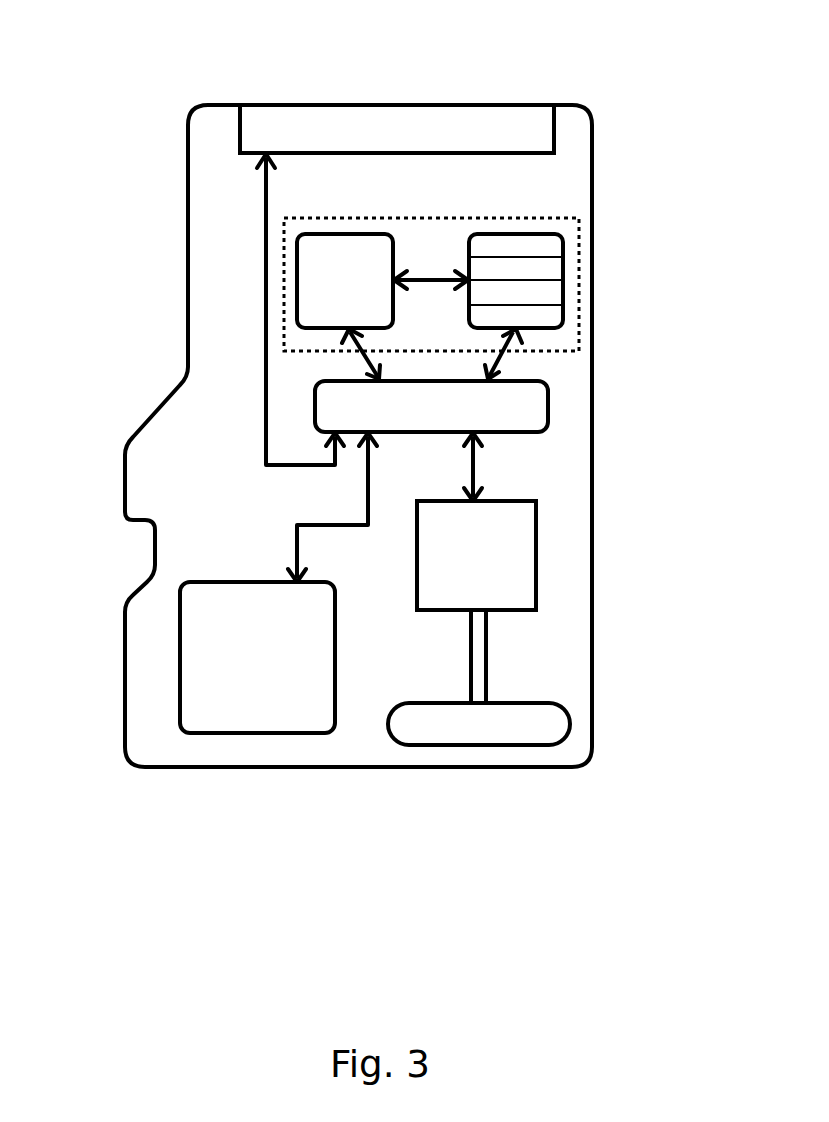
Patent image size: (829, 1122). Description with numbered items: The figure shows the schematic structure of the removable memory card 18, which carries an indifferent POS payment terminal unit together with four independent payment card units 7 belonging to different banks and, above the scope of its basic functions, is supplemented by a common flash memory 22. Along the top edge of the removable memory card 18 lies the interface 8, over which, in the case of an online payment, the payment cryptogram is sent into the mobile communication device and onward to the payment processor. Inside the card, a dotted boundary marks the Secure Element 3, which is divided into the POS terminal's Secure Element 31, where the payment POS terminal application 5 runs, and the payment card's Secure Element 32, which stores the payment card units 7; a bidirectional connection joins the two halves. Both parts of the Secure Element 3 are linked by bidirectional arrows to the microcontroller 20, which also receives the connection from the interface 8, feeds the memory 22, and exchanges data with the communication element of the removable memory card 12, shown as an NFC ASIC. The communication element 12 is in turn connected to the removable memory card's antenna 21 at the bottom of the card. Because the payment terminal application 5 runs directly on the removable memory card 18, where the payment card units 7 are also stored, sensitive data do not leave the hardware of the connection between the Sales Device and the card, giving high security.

The removable memory card 18 is at (566, 173).
The interface 8 is at (367, 128).
The Secure Element 3 is at (283, 246).
The POS terminal's Secure Element 31 is at (297, 280).
The payment POS terminal application 5 is at (352, 248).
The payment card's Secure Element 32 is at (588, 282).
The payment card unit 7 is at (538, 312).
The microcontroller 20 is at (490, 409).
The communication element of the removable memory card 12 is at (502, 578).
The removable memory card's antenna 21 is at (515, 728).
The memory 22 is at (225, 702).